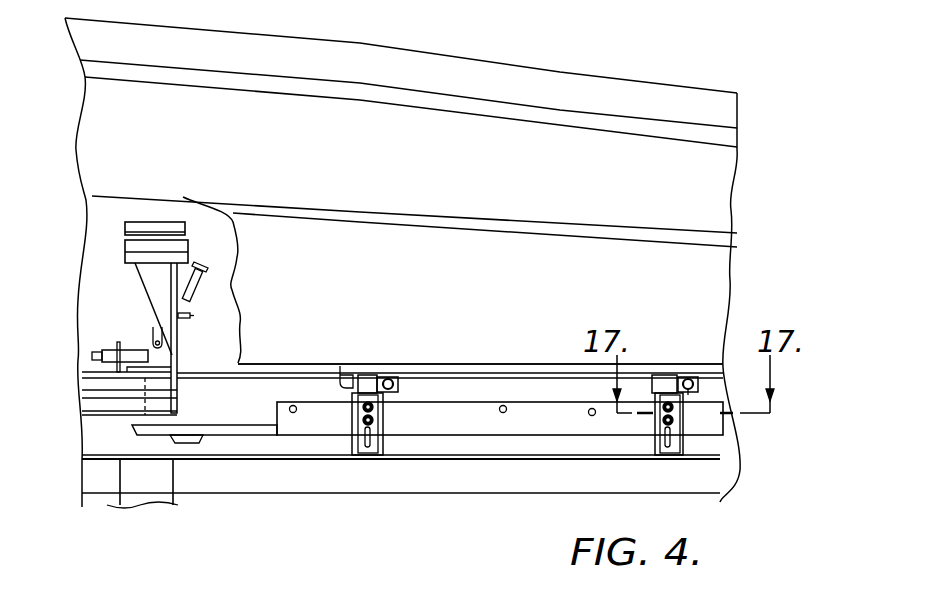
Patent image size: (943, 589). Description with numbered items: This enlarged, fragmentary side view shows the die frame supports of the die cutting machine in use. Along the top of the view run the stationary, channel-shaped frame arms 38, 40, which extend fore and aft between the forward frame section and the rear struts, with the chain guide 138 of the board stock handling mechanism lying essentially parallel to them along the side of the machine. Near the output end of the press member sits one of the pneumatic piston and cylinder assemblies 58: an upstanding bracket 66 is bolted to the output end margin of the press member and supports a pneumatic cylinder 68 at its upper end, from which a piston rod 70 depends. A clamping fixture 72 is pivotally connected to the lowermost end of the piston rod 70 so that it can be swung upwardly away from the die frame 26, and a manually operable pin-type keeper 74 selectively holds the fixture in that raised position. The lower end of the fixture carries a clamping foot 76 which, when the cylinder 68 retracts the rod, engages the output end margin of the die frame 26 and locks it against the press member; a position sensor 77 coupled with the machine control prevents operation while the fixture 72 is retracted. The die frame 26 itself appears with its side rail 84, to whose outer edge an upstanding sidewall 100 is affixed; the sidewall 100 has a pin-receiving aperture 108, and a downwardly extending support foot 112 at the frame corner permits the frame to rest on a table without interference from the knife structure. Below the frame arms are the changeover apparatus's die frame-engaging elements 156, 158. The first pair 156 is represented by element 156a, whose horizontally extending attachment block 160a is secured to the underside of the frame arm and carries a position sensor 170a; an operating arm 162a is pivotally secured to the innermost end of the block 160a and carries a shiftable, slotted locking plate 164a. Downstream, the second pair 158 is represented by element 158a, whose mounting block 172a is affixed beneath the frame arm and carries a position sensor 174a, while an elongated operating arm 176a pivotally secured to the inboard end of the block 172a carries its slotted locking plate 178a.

The chain guide 138 is at (503, 77).
The frame arm 38 is at (586, 248).
The frame arm 40 is at (92, 197).
The pneumatic piston and cylinder assembly 58 is at (148, 210).
The pneumatic cylinder 68 is at (183, 222).
The upstanding bracket 66 is at (148, 281).
The piston rod 70 is at (152, 337).
The clamping foot 76 is at (197, 266).
The clamping fixture 72 is at (192, 303).
The pin-type keeper 74 is at (185, 318).
The position sensor 77 is at (107, 355).
The side rail 84 is at (230, 433).
The support foot 112 is at (182, 443).
The sidewall 100 is at (517, 417).
The pin-receiving aperture 108 is at (590, 415).
The die frame 26 is at (491, 392).
The die frame-engaging elements 156 is at (375, 409).
The die frame-engaging element 156a is at (368, 375).
The attachment block 160a is at (353, 387).
The position sensor 170a is at (393, 382).
The operating arm 162a is at (352, 442).
The slotted locking plate 164a is at (373, 443).
The die frame-engaging elements 158 is at (711, 405).
The die frame-engaging element 158a is at (667, 377).
The mounting block 172a is at (690, 378).
The position sensor 174a is at (690, 390).
The operating arm 176a is at (685, 442).
The slotted locking plate 178a is at (677, 455).